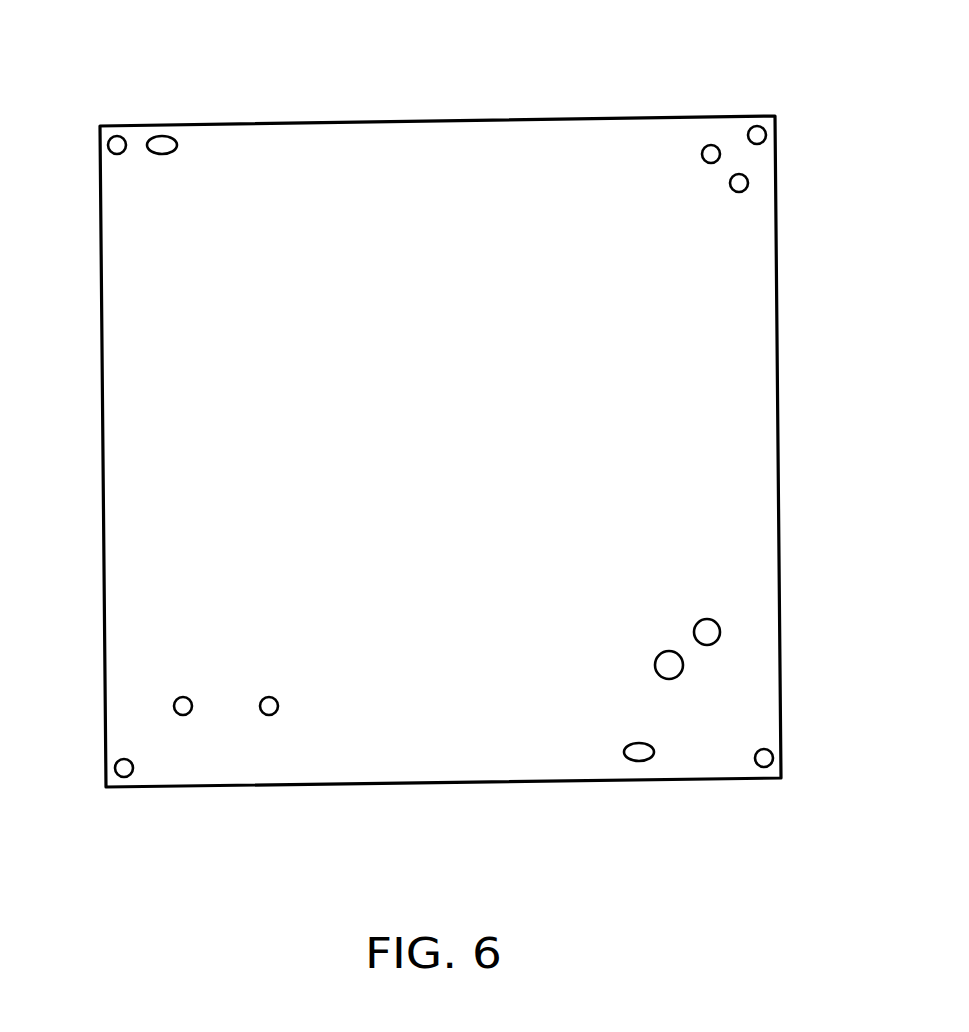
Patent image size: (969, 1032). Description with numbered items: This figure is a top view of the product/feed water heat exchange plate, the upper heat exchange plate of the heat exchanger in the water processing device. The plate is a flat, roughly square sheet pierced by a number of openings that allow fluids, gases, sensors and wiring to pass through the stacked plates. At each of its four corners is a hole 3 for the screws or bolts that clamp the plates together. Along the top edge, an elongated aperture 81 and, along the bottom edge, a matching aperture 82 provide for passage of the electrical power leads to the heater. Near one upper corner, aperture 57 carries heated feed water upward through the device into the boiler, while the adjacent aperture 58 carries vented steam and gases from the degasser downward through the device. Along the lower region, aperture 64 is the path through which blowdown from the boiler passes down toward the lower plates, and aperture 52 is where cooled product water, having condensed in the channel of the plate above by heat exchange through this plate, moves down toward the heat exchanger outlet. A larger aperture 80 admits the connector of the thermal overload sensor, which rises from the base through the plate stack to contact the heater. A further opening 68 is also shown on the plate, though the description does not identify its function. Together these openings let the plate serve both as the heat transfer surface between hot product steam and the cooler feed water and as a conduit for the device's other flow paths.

The holes 3 is at (118, 136).
The aperture 81 is at (161, 140).
The aperture 57 is at (707, 146).
The aperture 58 is at (746, 190).
The aperture 64 is at (184, 715).
The aperture 52 is at (276, 712).
The aperture 80 is at (716, 641).
The hole 68 is at (678, 676).
The aperture 82 is at (638, 760).